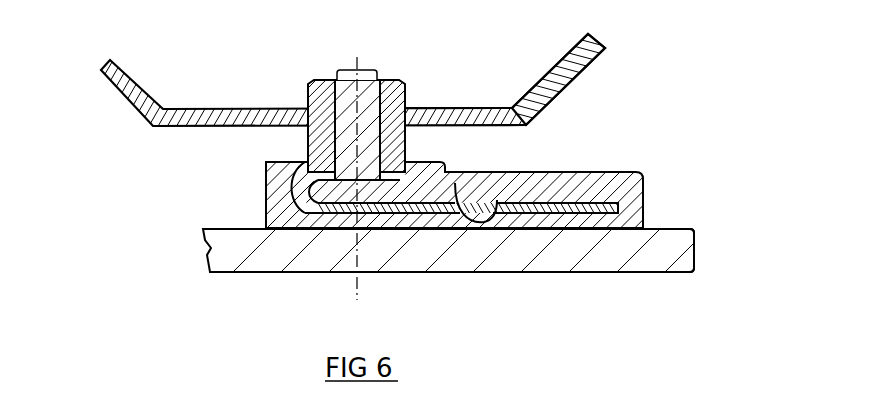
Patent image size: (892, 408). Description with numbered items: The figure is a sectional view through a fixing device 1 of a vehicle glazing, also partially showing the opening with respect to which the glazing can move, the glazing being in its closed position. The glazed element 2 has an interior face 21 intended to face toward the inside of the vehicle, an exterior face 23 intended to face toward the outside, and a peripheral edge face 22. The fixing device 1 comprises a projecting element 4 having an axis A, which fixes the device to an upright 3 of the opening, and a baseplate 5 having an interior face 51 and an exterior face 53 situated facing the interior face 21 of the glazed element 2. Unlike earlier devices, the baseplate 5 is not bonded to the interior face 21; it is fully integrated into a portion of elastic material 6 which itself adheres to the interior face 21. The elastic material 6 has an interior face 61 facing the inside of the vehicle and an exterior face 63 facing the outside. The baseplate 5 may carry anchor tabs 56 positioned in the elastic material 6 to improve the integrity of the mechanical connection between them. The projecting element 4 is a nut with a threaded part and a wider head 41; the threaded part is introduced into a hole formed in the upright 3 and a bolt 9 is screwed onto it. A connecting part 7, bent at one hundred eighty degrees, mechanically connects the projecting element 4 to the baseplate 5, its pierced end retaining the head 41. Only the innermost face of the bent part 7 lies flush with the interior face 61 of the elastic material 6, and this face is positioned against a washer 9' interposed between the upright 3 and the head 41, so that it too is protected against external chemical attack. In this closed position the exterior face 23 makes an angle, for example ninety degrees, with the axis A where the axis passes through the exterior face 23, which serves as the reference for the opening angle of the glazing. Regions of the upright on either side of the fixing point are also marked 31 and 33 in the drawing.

The fixing device 1 is at (198, 77).
The glazed element 2 is at (614, 256).
The upright 3 is at (108, 76).
The projecting element 4 is at (333, 78).
The baseplate 5 is at (613, 170).
The portion of elastic material 6 is at (575, 169).
The connecting part 7 is at (266, 186).
The bolt 9 is at (374, 104).
The washer 9' is at (252, 151).
The interior face 21 is at (213, 229).
The peripheral edge face 22 is at (697, 248).
The exterior face 23 is at (228, 272).
The flat portion of sheet 31 is at (465, 105).
The angled portion of sheet 33 is at (590, 62).
The head 41 is at (372, 183).
The interior face 51 is at (470, 197).
The exterior face 53 is at (547, 214).
The anchor tab 56 is at (497, 230).
The interior face 61 is at (533, 165).
The exterior face 63 is at (283, 230).
The axis A is at (377, 72).